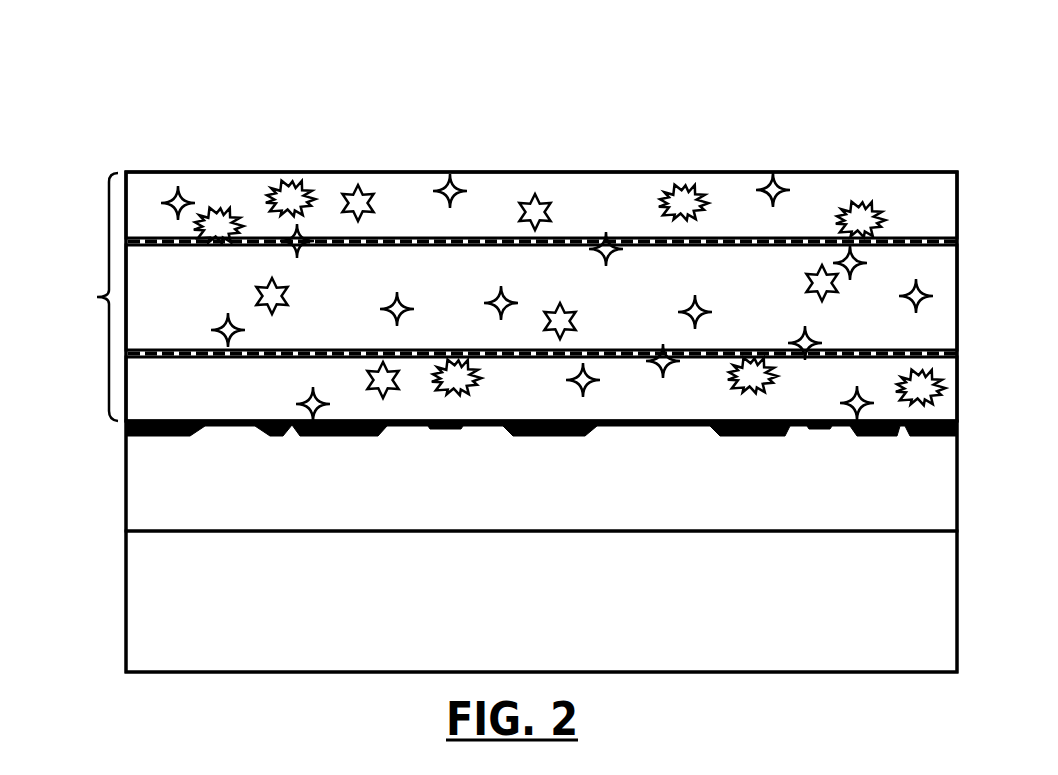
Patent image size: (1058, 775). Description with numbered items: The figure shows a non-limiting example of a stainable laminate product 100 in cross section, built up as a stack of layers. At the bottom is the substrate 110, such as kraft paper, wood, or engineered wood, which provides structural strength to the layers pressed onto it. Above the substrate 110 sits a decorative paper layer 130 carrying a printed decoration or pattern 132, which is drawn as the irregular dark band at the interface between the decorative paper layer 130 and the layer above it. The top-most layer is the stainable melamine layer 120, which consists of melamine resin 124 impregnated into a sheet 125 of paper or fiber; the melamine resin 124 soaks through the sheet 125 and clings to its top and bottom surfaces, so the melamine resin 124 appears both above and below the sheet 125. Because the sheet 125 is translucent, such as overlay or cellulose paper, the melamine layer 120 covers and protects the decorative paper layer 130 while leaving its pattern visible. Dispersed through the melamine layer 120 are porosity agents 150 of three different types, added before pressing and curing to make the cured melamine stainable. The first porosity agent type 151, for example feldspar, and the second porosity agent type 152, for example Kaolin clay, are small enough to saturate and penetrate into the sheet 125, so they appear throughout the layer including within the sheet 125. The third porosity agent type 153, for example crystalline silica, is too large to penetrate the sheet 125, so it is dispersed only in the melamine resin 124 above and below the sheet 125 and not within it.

The stainable laminate product 100 is at (876, 152).
The substrate 110 is at (192, 657).
The stainable melamine layer 120 is at (97, 297).
The melamine resin 124 is at (388, 187).
The sheet 125 is at (190, 337).
The decorative paper layer 130 is at (192, 515).
The printed decoration or pattern 132 is at (147, 437).
The porosity agent 150 is at (498, 234).
The first porosity agent type 151 is at (178, 196).
The second porosity agent type 152 is at (540, 200).
The third porosity agent type 153 is at (688, 190).